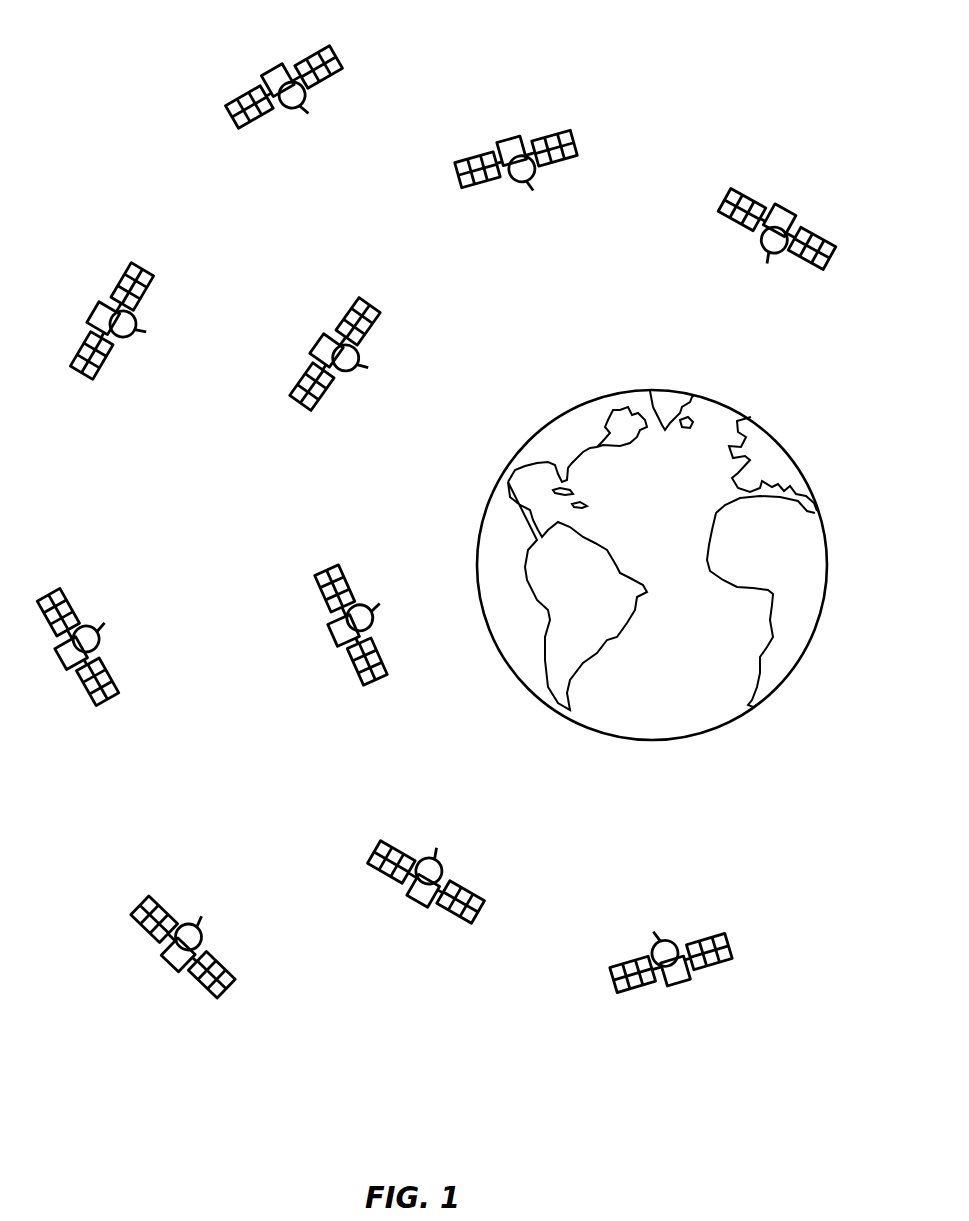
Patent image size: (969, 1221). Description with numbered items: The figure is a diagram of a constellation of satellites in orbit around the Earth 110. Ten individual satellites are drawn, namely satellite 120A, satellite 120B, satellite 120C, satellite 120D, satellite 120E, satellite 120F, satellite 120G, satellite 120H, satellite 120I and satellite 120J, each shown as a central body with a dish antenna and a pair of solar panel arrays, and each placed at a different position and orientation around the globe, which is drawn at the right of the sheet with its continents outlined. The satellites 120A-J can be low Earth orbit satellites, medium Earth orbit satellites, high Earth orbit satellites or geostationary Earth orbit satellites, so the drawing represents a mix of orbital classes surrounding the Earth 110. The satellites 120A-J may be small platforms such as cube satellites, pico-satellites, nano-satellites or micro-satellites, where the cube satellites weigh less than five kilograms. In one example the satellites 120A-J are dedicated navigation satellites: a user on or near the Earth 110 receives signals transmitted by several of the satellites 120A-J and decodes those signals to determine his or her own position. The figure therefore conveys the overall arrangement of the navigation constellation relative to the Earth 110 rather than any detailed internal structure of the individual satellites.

The Earth 110 is at (797, 460).
The satellite 120A is at (815, 231).
The satellite 120B is at (555, 132).
The satellite 120C is at (366, 305).
The satellite 120D is at (350, 583).
The satellite 120E is at (470, 889).
The satellite 120F is at (730, 944).
The satellite 120G is at (333, 59).
The satellite 120H is at (142, 271).
The satellite 120I is at (73, 603).
The satellite 120J is at (228, 971).